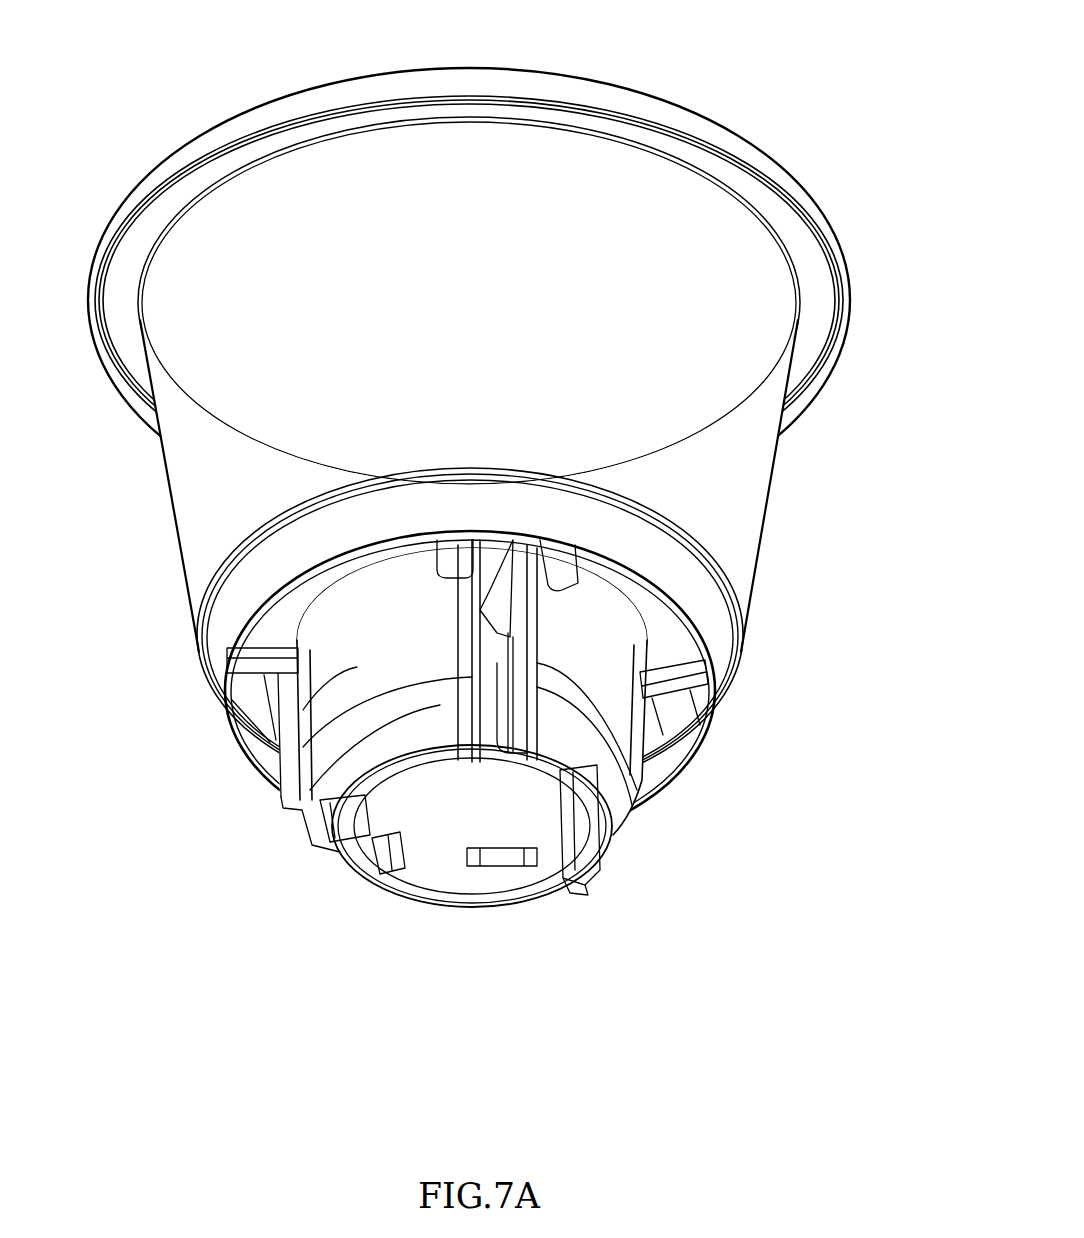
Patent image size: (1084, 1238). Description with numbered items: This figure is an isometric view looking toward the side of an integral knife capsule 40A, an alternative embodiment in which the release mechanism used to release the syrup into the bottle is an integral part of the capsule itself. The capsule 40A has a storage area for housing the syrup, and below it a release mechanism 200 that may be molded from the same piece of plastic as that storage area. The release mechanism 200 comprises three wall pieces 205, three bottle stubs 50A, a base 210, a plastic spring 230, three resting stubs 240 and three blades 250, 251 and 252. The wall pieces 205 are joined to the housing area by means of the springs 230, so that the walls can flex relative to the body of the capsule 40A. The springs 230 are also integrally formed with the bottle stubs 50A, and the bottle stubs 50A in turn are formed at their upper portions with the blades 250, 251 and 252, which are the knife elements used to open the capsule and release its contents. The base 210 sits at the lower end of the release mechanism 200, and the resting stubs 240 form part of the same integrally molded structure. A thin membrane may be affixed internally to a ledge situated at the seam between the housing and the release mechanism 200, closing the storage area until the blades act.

The integral knife capsule 40A is at (748, 96).
The release mechanism 200 is at (505, 704).
The wall pieces 205 is at (357, 667).
The resting stubs 240 is at (515, 612).
The bottle stubs 50A is at (300, 795).
The plastic spring 230 is at (357, 810).
The blade 252 is at (403, 843).
The blade 250 is at (577, 877).
The blade 251 is at (570, 890).
The base 210 is at (458, 817).